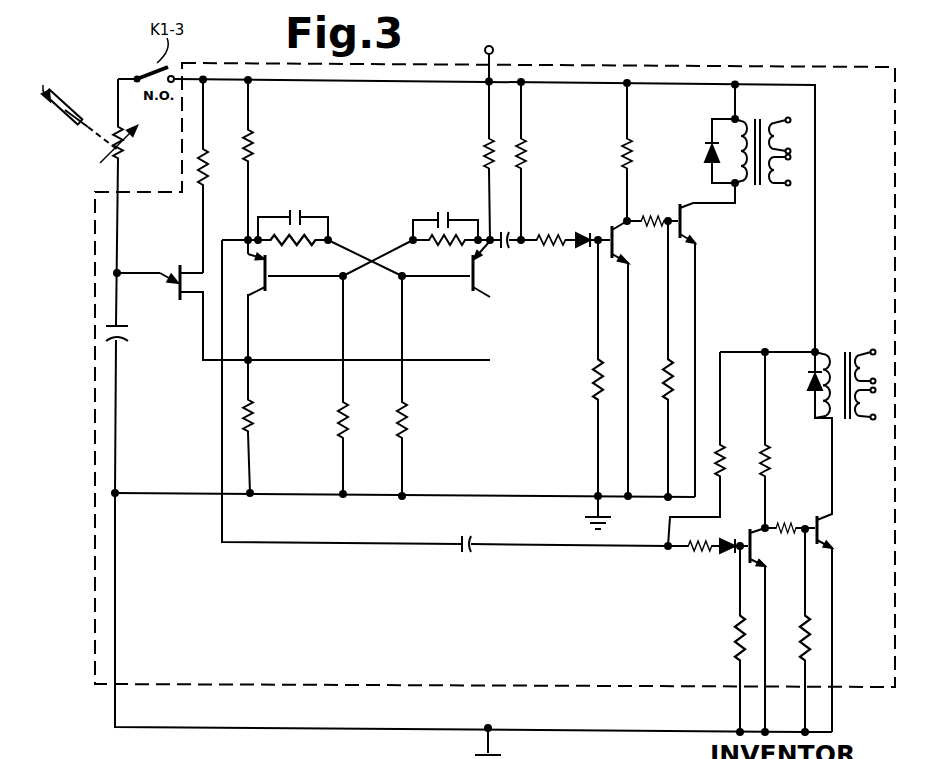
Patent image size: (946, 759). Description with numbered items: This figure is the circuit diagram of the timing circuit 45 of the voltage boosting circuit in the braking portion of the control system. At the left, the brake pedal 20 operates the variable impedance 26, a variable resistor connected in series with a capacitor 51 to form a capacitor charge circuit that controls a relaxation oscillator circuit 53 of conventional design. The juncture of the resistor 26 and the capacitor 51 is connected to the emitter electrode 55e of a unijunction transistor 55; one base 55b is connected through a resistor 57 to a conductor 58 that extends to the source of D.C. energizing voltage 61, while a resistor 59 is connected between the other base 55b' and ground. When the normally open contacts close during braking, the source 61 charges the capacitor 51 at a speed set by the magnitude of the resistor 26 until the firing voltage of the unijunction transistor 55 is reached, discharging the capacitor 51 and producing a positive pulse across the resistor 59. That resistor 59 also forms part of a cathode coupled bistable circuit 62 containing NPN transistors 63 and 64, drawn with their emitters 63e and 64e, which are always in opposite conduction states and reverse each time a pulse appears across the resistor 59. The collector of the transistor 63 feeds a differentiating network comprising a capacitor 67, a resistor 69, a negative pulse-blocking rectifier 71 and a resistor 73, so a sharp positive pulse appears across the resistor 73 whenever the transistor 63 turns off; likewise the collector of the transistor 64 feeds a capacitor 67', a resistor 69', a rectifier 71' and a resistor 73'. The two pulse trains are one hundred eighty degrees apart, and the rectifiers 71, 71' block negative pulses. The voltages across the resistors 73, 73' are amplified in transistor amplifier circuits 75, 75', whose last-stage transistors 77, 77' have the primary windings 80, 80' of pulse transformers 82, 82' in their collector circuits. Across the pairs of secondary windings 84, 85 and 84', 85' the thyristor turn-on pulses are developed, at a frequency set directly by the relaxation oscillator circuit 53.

The brake pedal 20 is at (63, 114).
The brake pedal operated variable impedance 26 is at (110, 147).
The timing circuit 45 is at (88, 372).
The capacitor 51 is at (112, 327).
The relaxation oscillator circuit 53 is at (175, 233).
The unijunction transistor 55 is at (162, 255).
The base of unijunction transistor 55b is at (182, 253).
The other base of unijunction transistor 55b' is at (200, 327).
The emitter electrode 55e is at (165, 281).
The resistor 57 is at (200, 168).
The conductor 58 is at (372, 83).
The resistor 59 is at (255, 422).
The source of D.C. energizing voltage 61 is at (485, 50).
The cathode coupled bistable circuit 62 is at (358, 182).
The NPN transistor 63 is at (270, 295).
The emitter of transistor 63 63e is at (246, 273).
The NPN transistor 64 is at (465, 309).
The emitter of transistor 64 64e is at (455, 259).
The capacitor 67 is at (546, 529).
The capacitor 67' is at (513, 264).
The resistor 69 is at (691, 565).
The resistor 69' is at (550, 266).
The negative pulse-blocking rectifier 71 is at (726, 564).
The negative pulse-blocking rectifier 71' is at (592, 224).
The resistor 73 is at (716, 639).
The resistor 73' is at (570, 368).
The transistor amplifier circuit 75 is at (780, 600).
The transistor amplifier circuit 75' is at (643, 291).
The transistor 77 is at (846, 609).
The transistor 77' is at (715, 340).
The primary winding 80 is at (776, 432).
The primary winding 80' is at (739, 136).
The pulse transformer 82 is at (842, 360).
The pulse transformer 82' is at (798, 111).
The secondary winding 84 is at (874, 347).
The secondary winding 84' is at (791, 123).
The secondary winding 85 is at (868, 422).
The secondary winding 85' is at (784, 189).